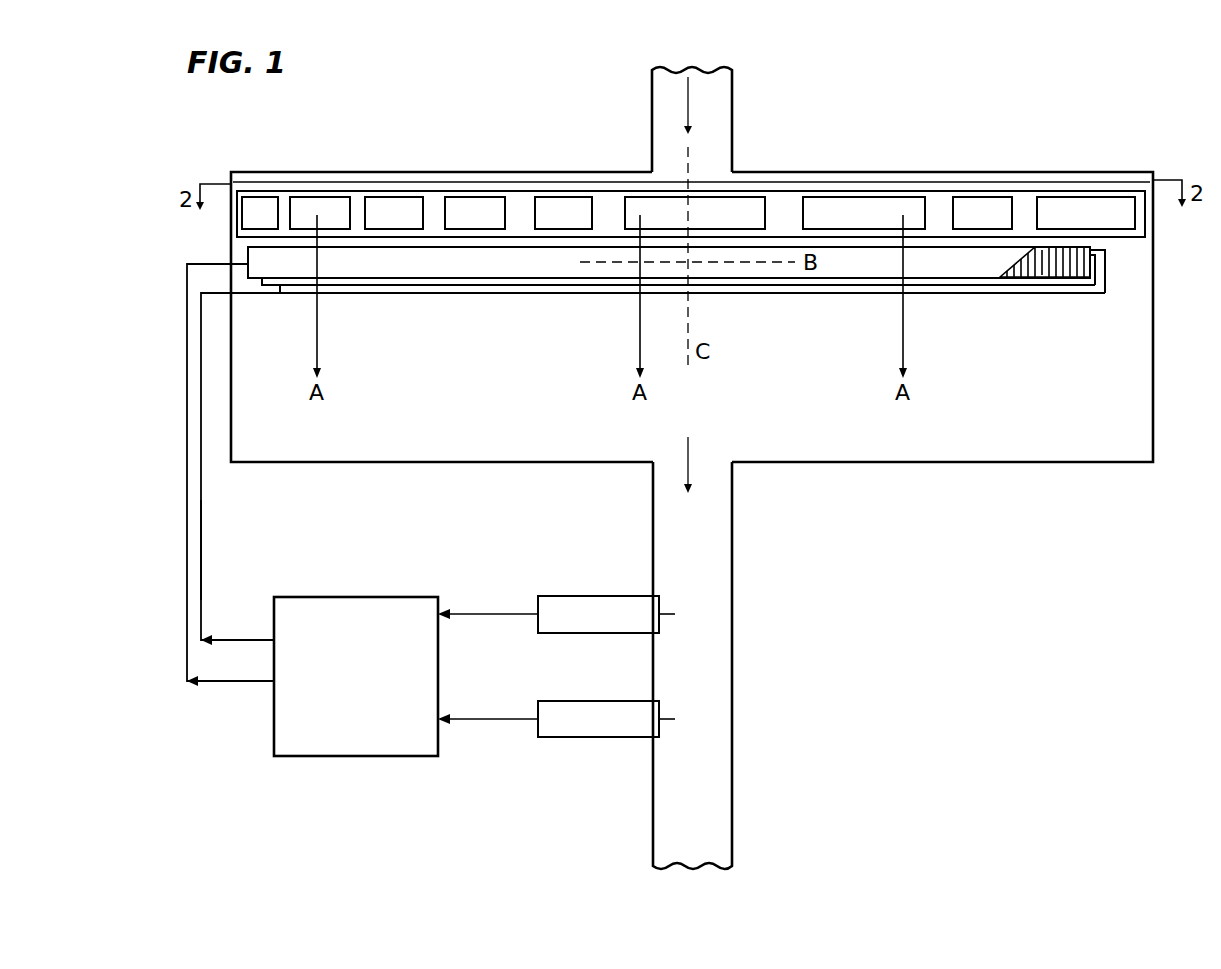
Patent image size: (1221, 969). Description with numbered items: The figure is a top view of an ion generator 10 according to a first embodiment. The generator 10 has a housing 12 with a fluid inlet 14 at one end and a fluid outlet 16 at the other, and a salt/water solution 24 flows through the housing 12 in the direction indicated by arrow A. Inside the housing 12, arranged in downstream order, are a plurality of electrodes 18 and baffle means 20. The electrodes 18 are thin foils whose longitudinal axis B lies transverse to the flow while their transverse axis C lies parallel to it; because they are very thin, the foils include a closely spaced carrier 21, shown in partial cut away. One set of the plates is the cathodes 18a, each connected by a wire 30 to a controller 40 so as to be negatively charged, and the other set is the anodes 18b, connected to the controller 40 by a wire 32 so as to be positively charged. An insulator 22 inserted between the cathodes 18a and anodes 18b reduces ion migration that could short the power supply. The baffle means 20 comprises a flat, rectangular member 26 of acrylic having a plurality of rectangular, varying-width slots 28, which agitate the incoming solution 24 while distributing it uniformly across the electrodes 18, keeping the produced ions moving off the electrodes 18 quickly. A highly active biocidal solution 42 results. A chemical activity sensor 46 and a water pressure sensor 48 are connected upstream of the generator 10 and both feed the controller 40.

The ion generator 10 is at (364, 120).
The housing 12 is at (977, 463).
The fluid inlet 14 is at (732, 150).
The fluid outlet 16 is at (732, 535).
The electrodes 18 is at (684, 316).
The cathodes 18a is at (433, 267).
The anodes 18b is at (560, 296).
The baffle means 20 is at (1133, 247).
The carrier 21 is at (1040, 267).
The insulator 22 is at (1093, 293).
The salt/water solution 24 is at (712, 97).
The flat, rectangular member 26 is at (518, 213).
The slots 28 is at (390, 198).
The wire 30 is at (186, 298).
The wire 32 is at (203, 563).
The controller 40 is at (358, 597).
The biocidal solution 42 is at (703, 585).
The chemical activity sensor 46 is at (573, 597).
The water pressure sensor 48 is at (573, 702).